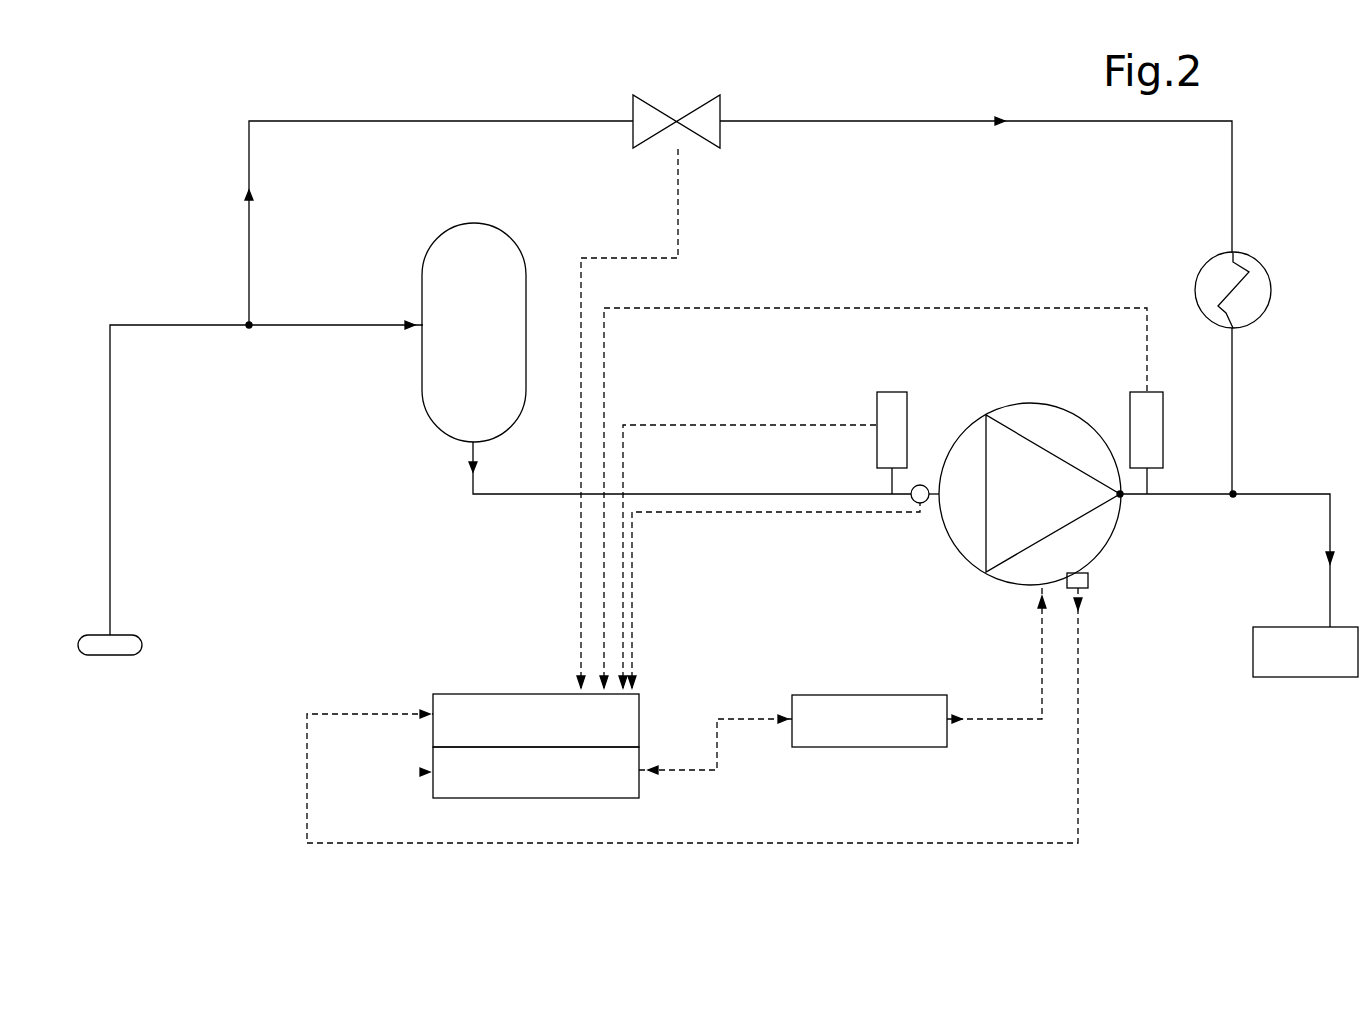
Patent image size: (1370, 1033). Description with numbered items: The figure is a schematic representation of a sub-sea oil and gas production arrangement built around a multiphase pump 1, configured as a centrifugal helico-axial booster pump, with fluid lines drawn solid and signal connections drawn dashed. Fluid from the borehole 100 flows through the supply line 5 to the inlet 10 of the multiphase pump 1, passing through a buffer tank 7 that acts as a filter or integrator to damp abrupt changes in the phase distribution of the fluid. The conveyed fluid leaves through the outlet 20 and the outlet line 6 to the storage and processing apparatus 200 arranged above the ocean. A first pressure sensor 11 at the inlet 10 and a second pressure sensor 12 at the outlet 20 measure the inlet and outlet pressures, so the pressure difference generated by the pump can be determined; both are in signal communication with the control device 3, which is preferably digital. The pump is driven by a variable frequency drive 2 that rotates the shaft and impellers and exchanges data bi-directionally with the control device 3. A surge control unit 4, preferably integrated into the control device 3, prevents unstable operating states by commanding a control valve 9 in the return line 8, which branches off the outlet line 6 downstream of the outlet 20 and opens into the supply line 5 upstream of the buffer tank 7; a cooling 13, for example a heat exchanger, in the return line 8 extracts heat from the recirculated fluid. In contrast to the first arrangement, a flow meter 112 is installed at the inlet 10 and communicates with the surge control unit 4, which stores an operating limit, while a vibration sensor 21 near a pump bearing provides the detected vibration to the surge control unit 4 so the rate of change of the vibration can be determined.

The multiphase pump 1 is at (1092, 552).
The variable frequency drive 2 is at (875, 748).
The control device 3 is at (420, 772).
The surge control unit 4 is at (480, 712).
The supply line 5 is at (160, 318).
The outlet line 6 is at (1310, 488).
The buffer tank 7 is at (492, 226).
The return line 8 is at (249, 153).
The control valve 9 is at (720, 140).
The inlet 10 is at (933, 500).
The first pressure sensor 11 is at (885, 392).
The second pressure sensor 12 is at (1152, 392).
The cooling 13 is at (1262, 312).
The outlet 20 is at (1122, 496).
The vibration sensor 21 is at (1082, 592).
The borehole 100 is at (142, 645).
The flow meter 112 is at (925, 487).
The storage and processing apparatus 200 is at (1300, 682).